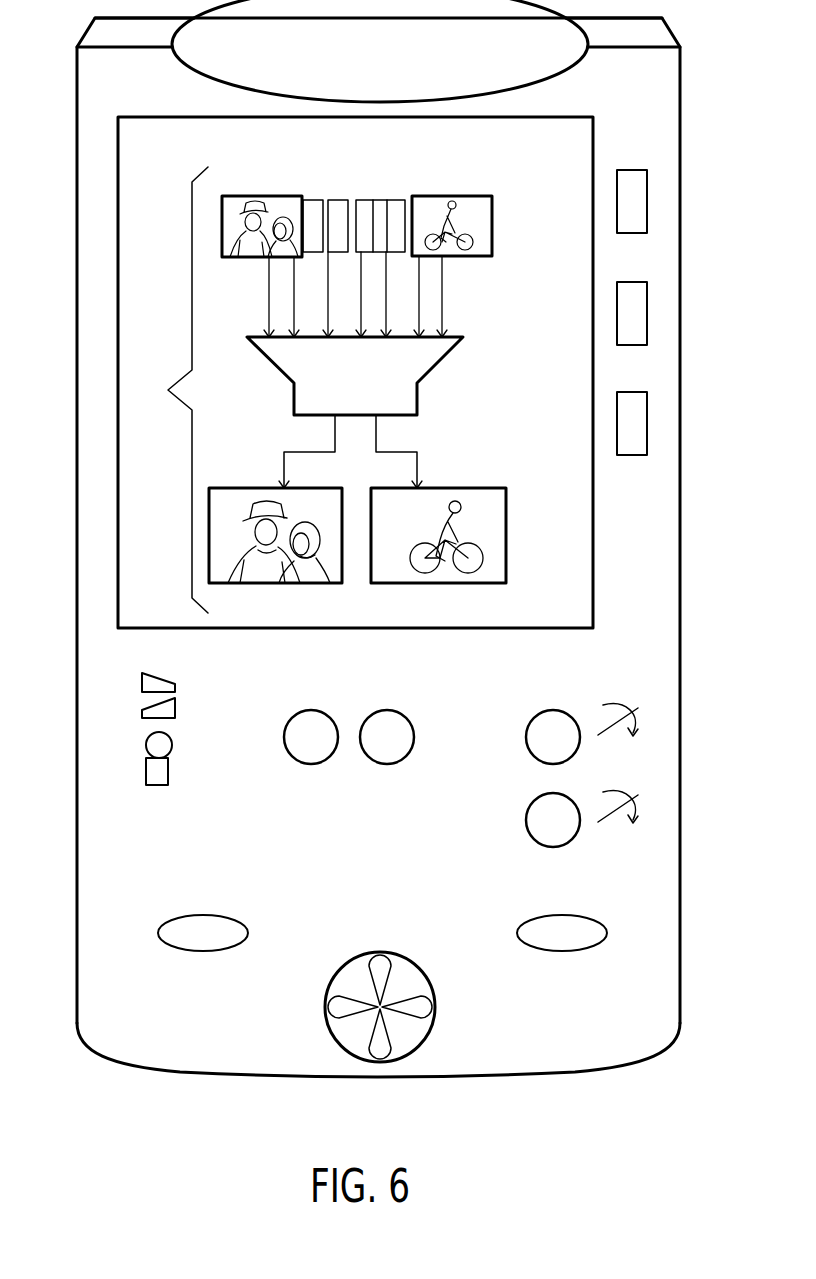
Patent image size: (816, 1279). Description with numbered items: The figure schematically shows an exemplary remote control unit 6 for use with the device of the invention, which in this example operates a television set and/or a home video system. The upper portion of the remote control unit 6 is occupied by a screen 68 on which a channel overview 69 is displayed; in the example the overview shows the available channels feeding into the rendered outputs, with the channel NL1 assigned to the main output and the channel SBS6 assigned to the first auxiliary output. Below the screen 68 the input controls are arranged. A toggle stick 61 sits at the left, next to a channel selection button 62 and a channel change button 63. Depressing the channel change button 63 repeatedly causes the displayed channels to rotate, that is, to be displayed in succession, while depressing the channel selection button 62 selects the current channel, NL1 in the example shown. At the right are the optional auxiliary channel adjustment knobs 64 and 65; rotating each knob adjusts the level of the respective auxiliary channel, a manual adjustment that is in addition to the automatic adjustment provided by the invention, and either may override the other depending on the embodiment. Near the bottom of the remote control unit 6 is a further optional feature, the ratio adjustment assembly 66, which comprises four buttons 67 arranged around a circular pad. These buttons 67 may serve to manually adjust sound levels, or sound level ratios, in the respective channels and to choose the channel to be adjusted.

The remote control unit 6 is at (145, 1068).
The toggle stick 61 is at (157, 785).
The channel selection button 62 is at (311, 764).
The channel change button 63 is at (387, 764).
The auxiliary channel adjustment knob 64 is at (532, 755).
The auxiliary channel adjustment knob 65 is at (532, 835).
The ratio adjustment assembly 66 is at (328, 1032).
The buttons 67 is at (387, 1033).
The screen 68 is at (124, 573).
The channel overview 69 is at (319, 394).